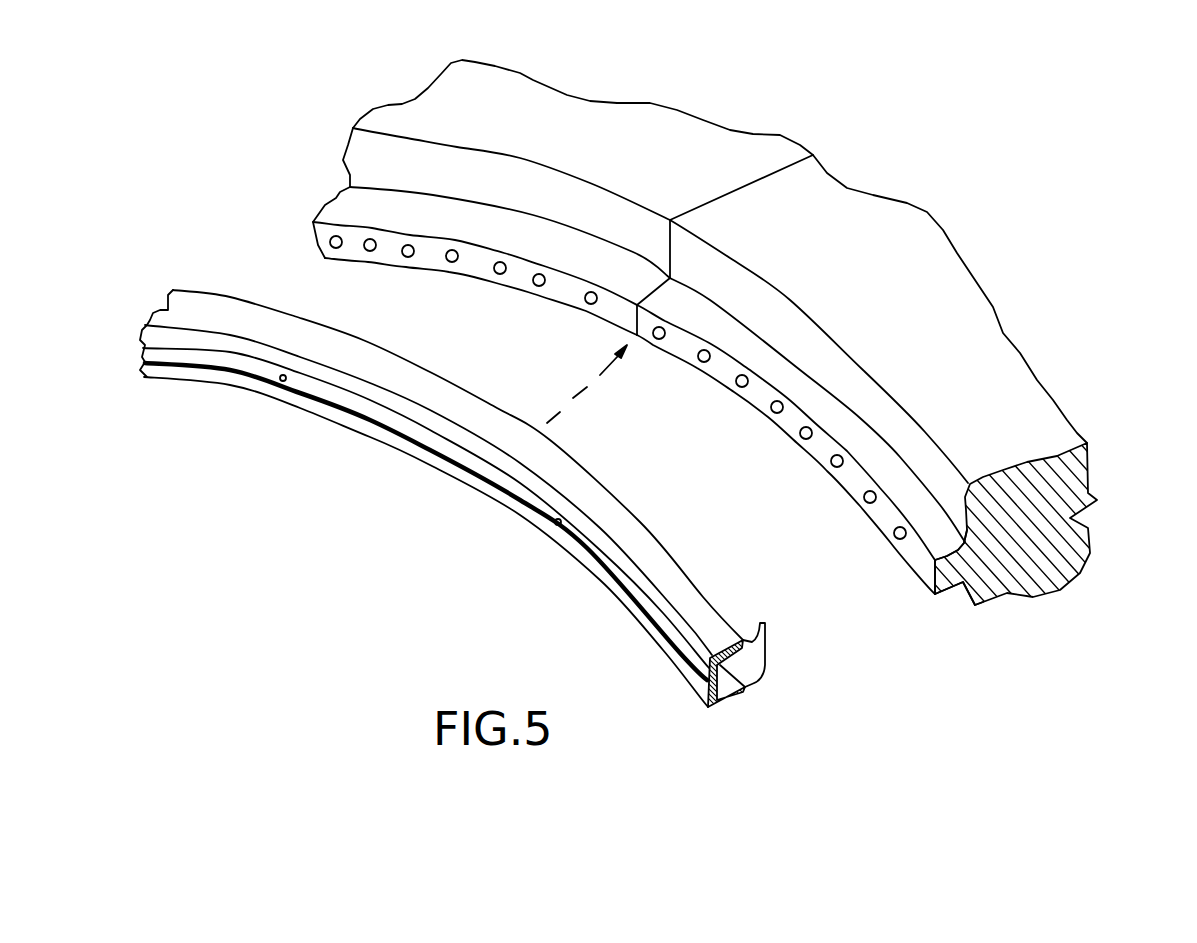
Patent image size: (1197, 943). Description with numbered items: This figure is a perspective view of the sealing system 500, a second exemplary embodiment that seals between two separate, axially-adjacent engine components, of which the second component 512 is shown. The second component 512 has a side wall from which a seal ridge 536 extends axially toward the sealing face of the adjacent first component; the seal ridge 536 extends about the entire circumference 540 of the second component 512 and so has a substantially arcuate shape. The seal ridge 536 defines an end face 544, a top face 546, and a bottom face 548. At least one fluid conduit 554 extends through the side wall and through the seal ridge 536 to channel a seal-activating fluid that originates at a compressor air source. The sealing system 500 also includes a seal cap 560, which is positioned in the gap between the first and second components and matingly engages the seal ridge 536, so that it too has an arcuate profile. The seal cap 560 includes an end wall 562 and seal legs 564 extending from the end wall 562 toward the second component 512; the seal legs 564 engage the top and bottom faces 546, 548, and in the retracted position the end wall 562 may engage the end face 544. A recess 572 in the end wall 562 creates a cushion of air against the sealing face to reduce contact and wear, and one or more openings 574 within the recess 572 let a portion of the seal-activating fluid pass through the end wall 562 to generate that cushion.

The sealing system 500 is at (243, 112).
The second component 512 is at (1035, 427).
The seal ridge 536 is at (937, 535).
The entire circumference 540 is at (536, 167).
The end face 544 is at (847, 480).
The top face 546 is at (857, 443).
The bottom face 548 is at (941, 596).
The fluid conduit 554 is at (710, 347).
The seal cap 560 is at (667, 644).
The end wall 562 is at (477, 487).
The seal legs 564 is at (768, 617).
The recess 572 is at (587, 545).
The openings 574 is at (280, 380).